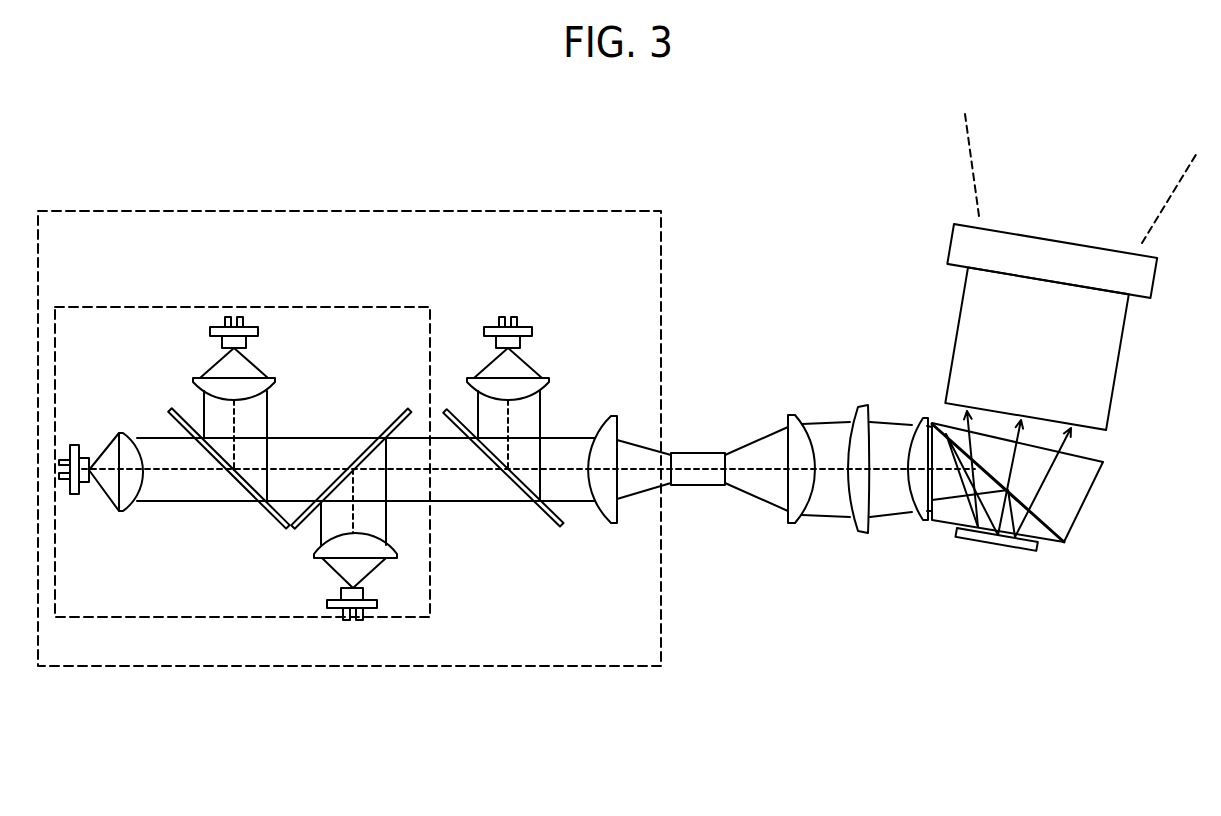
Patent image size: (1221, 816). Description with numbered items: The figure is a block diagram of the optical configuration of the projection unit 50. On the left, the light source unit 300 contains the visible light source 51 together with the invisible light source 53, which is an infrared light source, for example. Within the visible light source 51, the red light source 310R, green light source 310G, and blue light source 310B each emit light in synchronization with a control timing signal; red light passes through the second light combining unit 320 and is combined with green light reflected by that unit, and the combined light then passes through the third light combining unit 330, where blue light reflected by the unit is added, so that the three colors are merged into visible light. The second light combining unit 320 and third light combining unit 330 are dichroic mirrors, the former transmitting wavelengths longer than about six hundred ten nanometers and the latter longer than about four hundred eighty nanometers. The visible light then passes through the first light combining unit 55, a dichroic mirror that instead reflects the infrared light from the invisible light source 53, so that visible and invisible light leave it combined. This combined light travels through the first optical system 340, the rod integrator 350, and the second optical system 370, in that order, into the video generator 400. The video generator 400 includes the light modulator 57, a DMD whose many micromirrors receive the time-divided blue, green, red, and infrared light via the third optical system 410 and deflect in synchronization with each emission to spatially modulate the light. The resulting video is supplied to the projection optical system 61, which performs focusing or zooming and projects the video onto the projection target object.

The projection unit 50 is at (1129, 759).
The light source unit 300 is at (665, 249).
The visible light source 51 is at (348, 306).
The red light source 310R is at (112, 433).
The green light source 310G is at (200, 377).
The blue light source 310B is at (318, 573).
The second light combining unit 320 is at (257, 503).
The third light combining unit 330 is at (400, 410).
The invisible light source 53 is at (540, 351).
The first light combining unit 55 is at (544, 519).
The first optical system 340 is at (610, 525).
The rod integrator 350 is at (708, 488).
The second optical system 370 is at (942, 533).
The video generator 400 is at (1046, 371).
The third optical system 410 is at (1098, 477).
The light modulator 57 is at (980, 548).
The projection optical system 61 is at (957, 320).